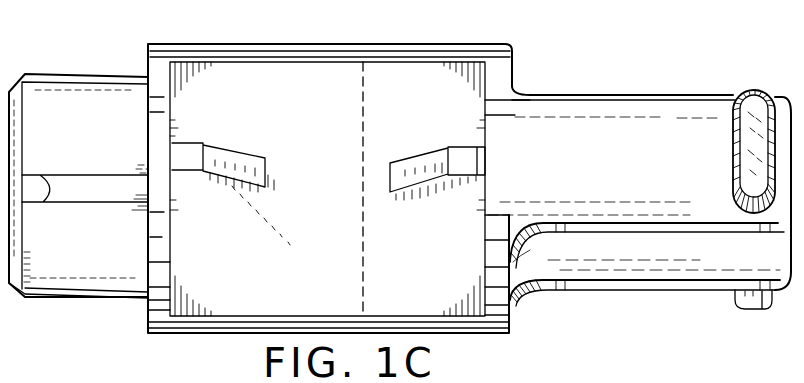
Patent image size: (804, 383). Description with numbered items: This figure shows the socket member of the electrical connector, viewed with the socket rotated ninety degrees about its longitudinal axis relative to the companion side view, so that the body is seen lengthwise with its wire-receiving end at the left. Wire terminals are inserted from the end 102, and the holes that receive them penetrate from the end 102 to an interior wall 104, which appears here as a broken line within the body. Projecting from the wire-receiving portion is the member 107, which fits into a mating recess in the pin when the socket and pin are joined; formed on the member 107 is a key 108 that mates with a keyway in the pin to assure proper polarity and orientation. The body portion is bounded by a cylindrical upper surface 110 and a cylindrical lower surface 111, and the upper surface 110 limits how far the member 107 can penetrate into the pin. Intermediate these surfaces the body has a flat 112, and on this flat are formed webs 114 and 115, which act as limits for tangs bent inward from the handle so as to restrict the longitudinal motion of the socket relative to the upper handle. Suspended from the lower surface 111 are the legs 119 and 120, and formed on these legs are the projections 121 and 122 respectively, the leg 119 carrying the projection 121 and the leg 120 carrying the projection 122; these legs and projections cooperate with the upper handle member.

The end 102 is at (5, 98).
The interior wall 104 is at (367, 112).
The member 107 is at (93, 286).
The key 108 is at (95, 185).
The upper surface 110 is at (145, 312).
The lower surface 111 is at (513, 262).
The flat 112 is at (282, 273).
The web 114 is at (220, 153).
The web 115 is at (430, 163).
The leg 119 is at (617, 166).
The leg 120 is at (678, 259).
The projection 121 is at (748, 105).
The projection 122 is at (745, 302).